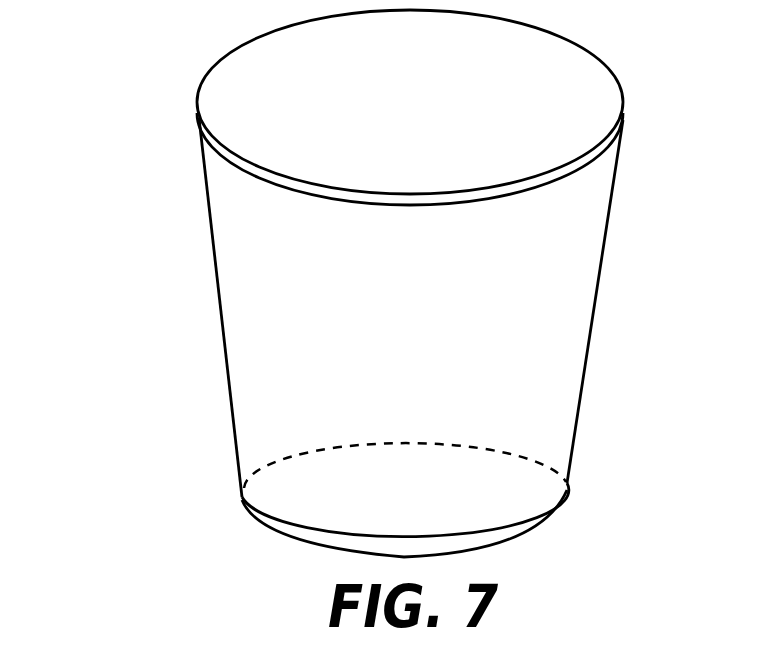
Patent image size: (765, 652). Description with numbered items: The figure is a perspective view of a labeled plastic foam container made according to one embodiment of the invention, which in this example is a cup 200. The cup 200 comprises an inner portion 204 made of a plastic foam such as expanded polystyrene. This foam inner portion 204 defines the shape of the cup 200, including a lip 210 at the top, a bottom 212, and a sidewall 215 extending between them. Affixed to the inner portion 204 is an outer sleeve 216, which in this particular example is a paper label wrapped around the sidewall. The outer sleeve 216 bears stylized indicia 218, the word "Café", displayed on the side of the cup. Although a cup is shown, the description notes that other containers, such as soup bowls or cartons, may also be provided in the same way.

The cup 200 is at (130, 134).
The inner portion 204 is at (577, 102).
The lip 210 is at (622, 127).
The bottom 212 is at (550, 483).
The sidewall 215 is at (528, 418).
The outer sleeve 216 is at (575, 328).
The indicia 218 is at (382, 308).